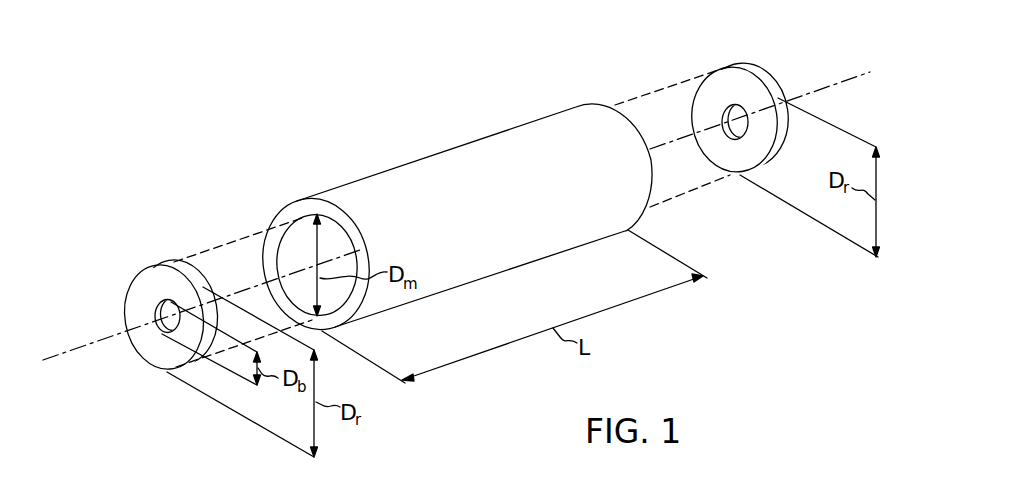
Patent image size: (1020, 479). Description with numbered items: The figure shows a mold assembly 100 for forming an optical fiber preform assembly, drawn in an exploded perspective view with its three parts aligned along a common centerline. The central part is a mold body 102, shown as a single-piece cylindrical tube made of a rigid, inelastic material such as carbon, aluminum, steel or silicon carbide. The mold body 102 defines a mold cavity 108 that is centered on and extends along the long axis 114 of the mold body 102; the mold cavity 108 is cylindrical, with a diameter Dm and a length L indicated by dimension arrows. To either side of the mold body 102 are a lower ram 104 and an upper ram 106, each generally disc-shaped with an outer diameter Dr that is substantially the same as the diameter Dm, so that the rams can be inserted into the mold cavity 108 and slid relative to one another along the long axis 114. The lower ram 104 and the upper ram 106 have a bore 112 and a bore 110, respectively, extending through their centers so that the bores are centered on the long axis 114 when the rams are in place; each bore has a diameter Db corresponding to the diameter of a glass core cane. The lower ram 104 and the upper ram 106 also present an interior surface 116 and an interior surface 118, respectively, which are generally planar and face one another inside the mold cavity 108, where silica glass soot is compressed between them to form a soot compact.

The mold assembly 100 is at (360, 127).
The mold body 102 is at (490, 133).
The lower ram 104 is at (762, 102).
The upper ram 106 is at (149, 293).
The mold cavity 108 is at (327, 240).
The bore 110 is at (157, 315).
The bore 112 is at (748, 123).
The long axis 114 is at (63, 354).
The interior surface 116 is at (712, 88).
The interior surface 118 is at (198, 275).